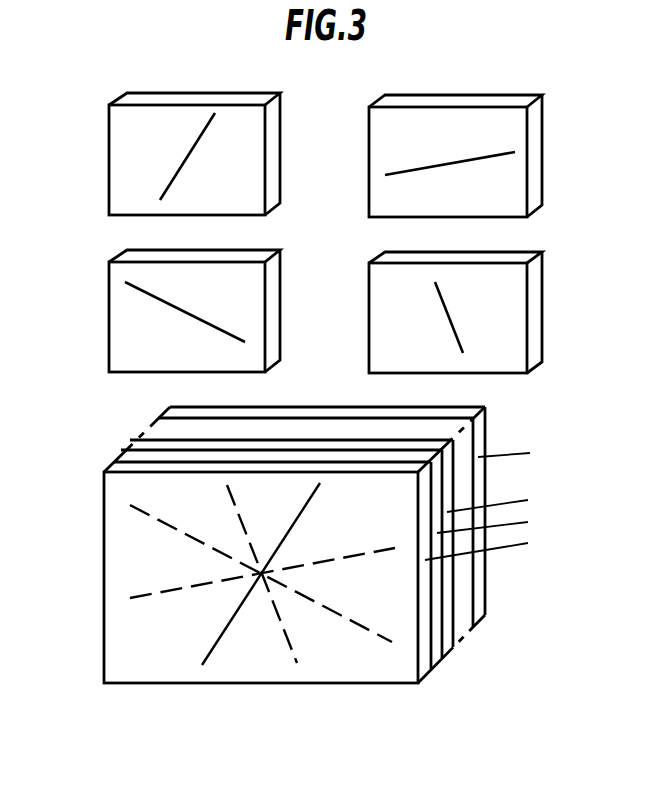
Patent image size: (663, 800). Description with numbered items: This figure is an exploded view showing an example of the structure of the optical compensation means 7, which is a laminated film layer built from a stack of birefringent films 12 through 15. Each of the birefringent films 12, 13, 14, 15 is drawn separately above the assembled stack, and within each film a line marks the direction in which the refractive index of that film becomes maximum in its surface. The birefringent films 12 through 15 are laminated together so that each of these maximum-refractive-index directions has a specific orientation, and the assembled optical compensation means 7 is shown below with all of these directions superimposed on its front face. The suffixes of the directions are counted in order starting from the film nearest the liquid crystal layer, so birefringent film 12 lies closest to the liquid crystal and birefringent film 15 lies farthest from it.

The optical compensation means 7 is at (123, 642).
The birefringent film 12 is at (123, 187).
The birefringent film 13 is at (383, 190).
The birefringent film 14 is at (123, 343).
The birefringent film 15 is at (383, 347).